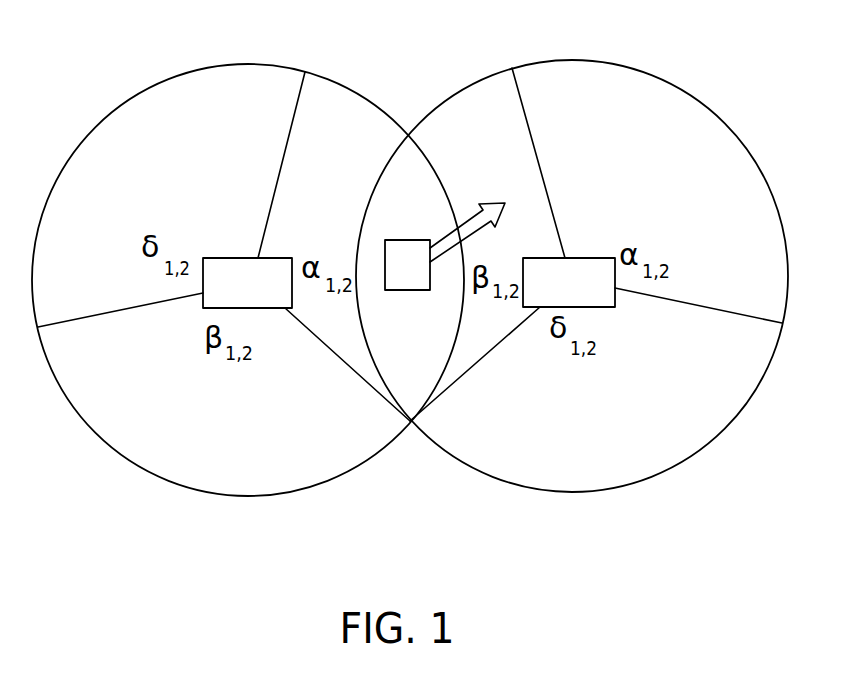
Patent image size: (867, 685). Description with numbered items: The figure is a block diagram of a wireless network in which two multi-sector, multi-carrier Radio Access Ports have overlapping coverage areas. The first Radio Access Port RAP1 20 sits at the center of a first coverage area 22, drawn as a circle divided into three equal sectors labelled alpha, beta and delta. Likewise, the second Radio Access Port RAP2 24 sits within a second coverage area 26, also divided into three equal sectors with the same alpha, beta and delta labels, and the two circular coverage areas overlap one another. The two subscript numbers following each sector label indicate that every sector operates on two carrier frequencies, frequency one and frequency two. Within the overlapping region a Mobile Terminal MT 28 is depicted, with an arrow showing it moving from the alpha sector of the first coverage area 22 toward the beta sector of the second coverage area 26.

The first Radio Access Port (RAP1) 20 is at (260, 309).
The first coverage area 22 is at (212, 63).
The second Radio Access Port (RAP2) 24 is at (600, 308).
The second coverage area 26 is at (598, 61).
The Mobile Terminal (MT) 28 is at (393, 240).